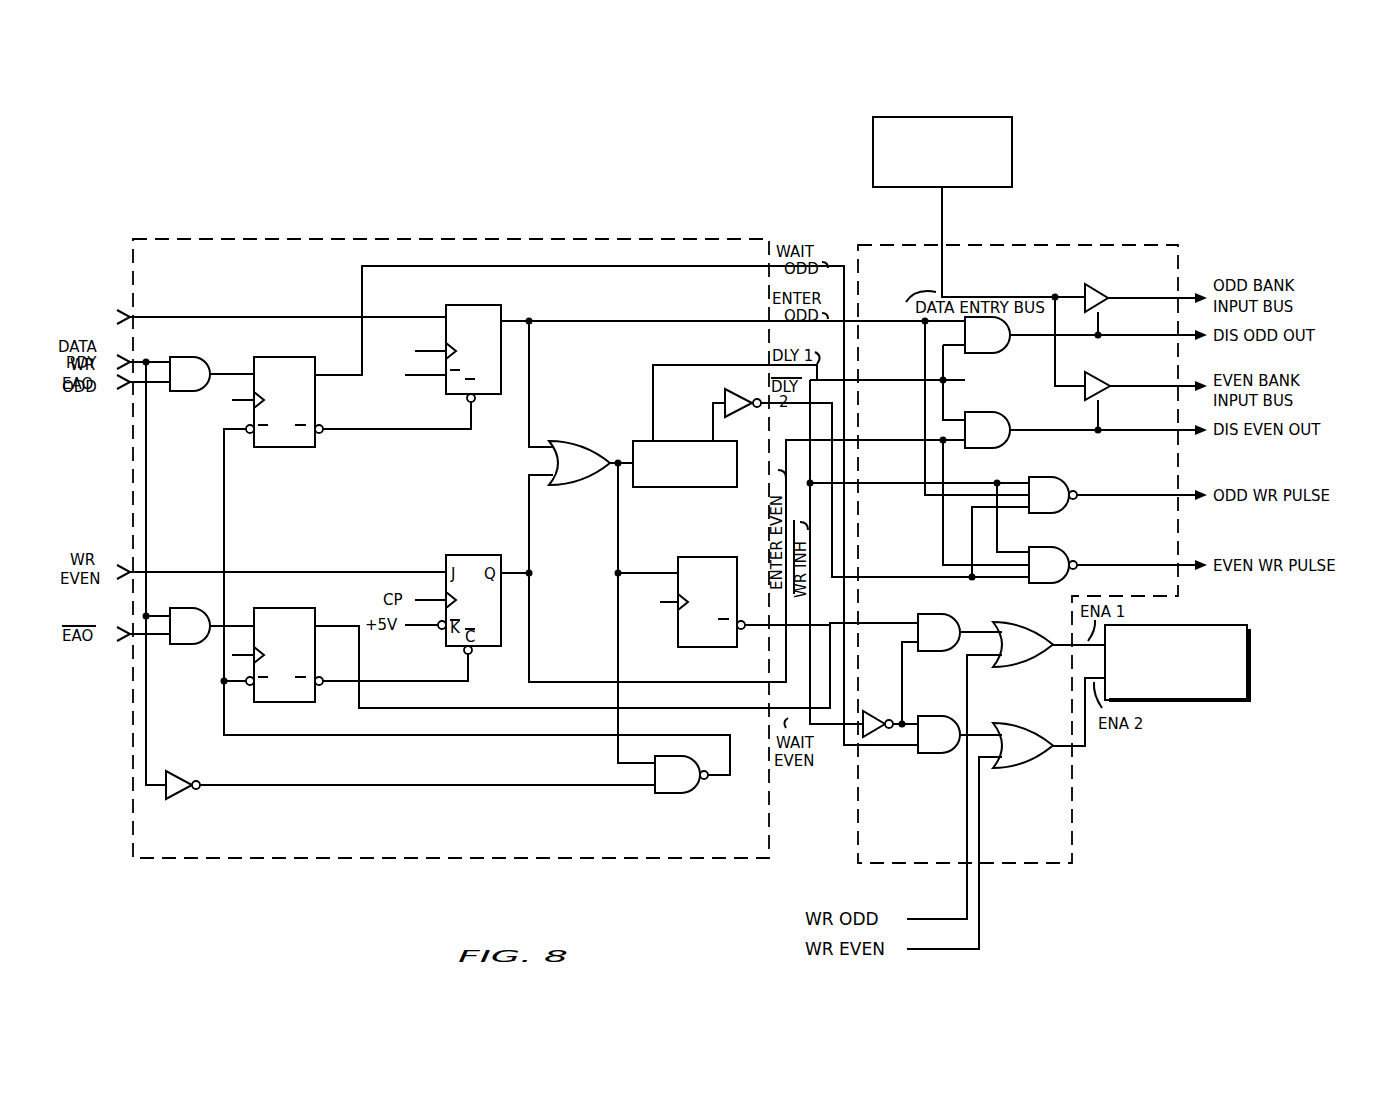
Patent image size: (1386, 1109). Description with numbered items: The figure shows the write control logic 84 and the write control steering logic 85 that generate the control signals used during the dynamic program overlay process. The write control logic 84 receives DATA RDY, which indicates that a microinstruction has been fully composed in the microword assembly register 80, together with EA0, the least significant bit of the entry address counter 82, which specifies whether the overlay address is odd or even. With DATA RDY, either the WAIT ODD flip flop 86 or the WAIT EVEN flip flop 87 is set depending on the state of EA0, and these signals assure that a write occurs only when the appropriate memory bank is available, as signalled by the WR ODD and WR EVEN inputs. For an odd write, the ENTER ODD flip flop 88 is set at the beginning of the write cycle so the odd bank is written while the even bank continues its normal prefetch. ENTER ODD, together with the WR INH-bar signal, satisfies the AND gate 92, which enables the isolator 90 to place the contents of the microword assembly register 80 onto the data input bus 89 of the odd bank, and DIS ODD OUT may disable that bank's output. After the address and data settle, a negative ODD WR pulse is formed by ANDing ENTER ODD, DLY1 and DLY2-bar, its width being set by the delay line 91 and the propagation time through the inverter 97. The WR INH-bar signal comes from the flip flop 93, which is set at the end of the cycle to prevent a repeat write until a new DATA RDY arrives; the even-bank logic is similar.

The microword assembly register 80 is at (1013, 146).
The entry address counter 82 is at (1249, 652).
The write control logic 84 is at (210, 240).
The write control steering logic 85 is at (1037, 246).
The WAIT ODD flip flop 86 is at (298, 357).
The WAIT EVEN flip flop 87 is at (270, 608).
The ENTER ODD flip flop 88 is at (455, 305).
The data input bus 89 is at (1158, 296).
The isolator 90 is at (1108, 292).
The delay line 91 is at (680, 487).
The AND gate 92 is at (1003, 352).
The flip flop 93 is at (690, 647).
The inverter 97 is at (722, 398).